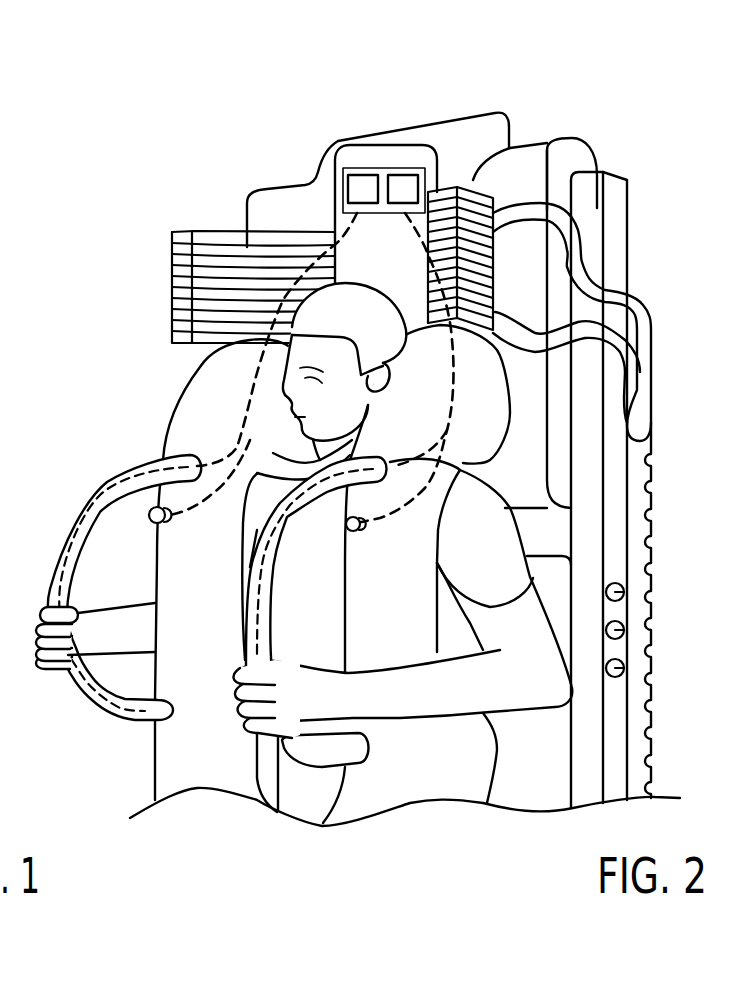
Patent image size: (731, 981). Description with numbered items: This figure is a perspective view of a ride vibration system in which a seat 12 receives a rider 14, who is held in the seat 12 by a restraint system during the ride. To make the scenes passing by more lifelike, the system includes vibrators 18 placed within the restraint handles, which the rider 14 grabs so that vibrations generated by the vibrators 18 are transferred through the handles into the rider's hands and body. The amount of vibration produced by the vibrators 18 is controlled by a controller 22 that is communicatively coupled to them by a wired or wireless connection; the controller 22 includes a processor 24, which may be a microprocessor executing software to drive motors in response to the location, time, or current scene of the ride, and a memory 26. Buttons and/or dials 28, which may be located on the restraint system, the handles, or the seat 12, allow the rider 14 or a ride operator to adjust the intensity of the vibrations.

The seat 12 is at (550, 768).
The rider 14 is at (546, 478).
The vibrators 18 is at (110, 470).
The controller 22 is at (362, 172).
The processor 24 is at (367, 168).
The memory 26 is at (405, 173).
The buttons and/or dials 28 is at (153, 521).